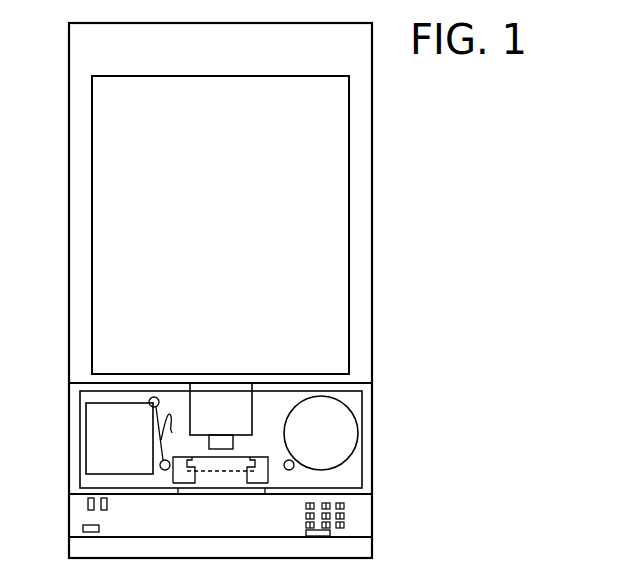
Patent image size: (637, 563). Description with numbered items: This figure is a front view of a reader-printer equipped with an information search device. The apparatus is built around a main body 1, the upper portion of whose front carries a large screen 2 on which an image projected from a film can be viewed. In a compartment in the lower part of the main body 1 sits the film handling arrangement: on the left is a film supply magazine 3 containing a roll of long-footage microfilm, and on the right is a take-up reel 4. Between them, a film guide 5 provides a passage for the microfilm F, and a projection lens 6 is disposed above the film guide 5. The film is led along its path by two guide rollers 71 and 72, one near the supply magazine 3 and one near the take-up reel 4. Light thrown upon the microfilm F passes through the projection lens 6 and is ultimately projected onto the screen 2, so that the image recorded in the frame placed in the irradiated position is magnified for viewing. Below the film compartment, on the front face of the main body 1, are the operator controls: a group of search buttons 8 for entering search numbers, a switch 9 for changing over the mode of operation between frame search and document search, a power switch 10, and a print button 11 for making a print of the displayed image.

The main body 1 is at (69, 246).
The screen 2 is at (344, 190).
The film supply magazine 3 is at (86, 434).
The take-up reel 4 is at (358, 432).
The film guide 5 is at (220, 466).
The projection lens 6 is at (233, 442).
The guide roller 71 is at (160, 462).
The guide roller 72 is at (292, 463).
The microfilm F is at (172, 424).
The search buttons 8 is at (346, 513).
The switch 9 is at (306, 533).
The power switch 10 is at (83, 529).
The print button 11 is at (86, 504).